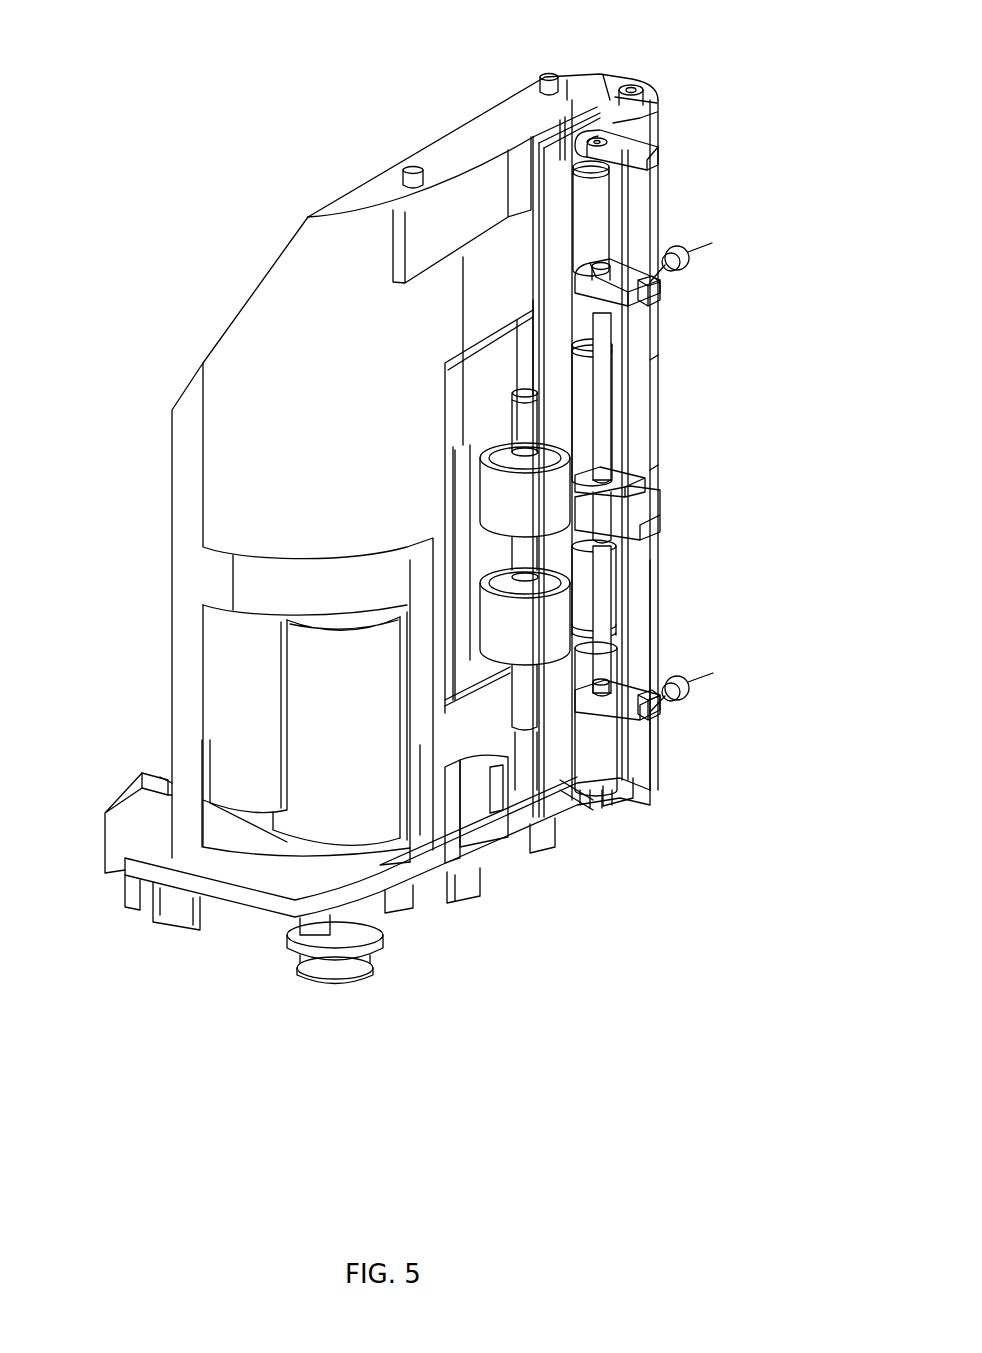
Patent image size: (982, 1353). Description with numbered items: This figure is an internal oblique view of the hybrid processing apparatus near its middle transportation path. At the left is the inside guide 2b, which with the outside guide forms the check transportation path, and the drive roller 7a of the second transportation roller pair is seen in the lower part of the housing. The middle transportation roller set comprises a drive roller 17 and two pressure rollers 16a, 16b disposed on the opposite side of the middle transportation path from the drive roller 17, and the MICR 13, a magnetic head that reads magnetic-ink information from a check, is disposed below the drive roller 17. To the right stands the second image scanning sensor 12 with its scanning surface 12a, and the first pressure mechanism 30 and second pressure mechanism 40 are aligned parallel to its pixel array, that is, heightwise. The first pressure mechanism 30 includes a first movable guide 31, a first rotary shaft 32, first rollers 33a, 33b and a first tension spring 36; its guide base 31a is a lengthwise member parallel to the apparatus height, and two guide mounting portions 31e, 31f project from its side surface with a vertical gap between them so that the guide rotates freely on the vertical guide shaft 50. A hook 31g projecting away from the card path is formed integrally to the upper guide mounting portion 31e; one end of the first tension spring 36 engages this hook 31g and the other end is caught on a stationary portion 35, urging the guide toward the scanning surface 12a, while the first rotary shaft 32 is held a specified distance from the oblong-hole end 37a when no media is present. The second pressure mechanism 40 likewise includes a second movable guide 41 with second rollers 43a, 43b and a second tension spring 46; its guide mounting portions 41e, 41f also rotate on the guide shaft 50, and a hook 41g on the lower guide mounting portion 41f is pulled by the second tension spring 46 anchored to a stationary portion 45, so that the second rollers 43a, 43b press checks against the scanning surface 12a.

The inside guide 2b is at (317, 212).
The drive roller 7a is at (305, 695).
The second image scanning sensor 12 is at (551, 155).
The scanning surface 12a is at (567, 147).
The MICR 13 is at (480, 827).
The pressure roller 16a is at (553, 495).
The pressure roller 16b is at (553, 640).
The drive roller 17 is at (472, 470).
The first pressure mechanism 30 is at (660, 138).
The first movable guide 31 is at (650, 175).
The guide base 31a is at (653, 378).
The guide mounting portion 31e is at (587, 283).
The guide mounting portion 31f is at (615, 482).
The hook 31g is at (663, 310).
The first rotary shaft 32 is at (598, 138).
The first roller 33a is at (597, 207).
The first roller 33b is at (585, 372).
The stationary portion 35 is at (705, 277).
The first tension spring 36 is at (642, 293).
The end of oblong hole 37a is at (634, 140).
The second pressure mechanism 40 is at (646, 564).
The second movable guide 41 is at (637, 542).
The guide mounting portion 41e is at (478, 503).
The guide mounting portion 41f is at (583, 767).
The hook 41g is at (660, 724).
The second roller 43a is at (583, 605).
The second roller 43b is at (603, 766).
The stationary portion 45 is at (705, 688).
The second tension spring 46 is at (642, 698).
The guide shaft 50 is at (602, 425).